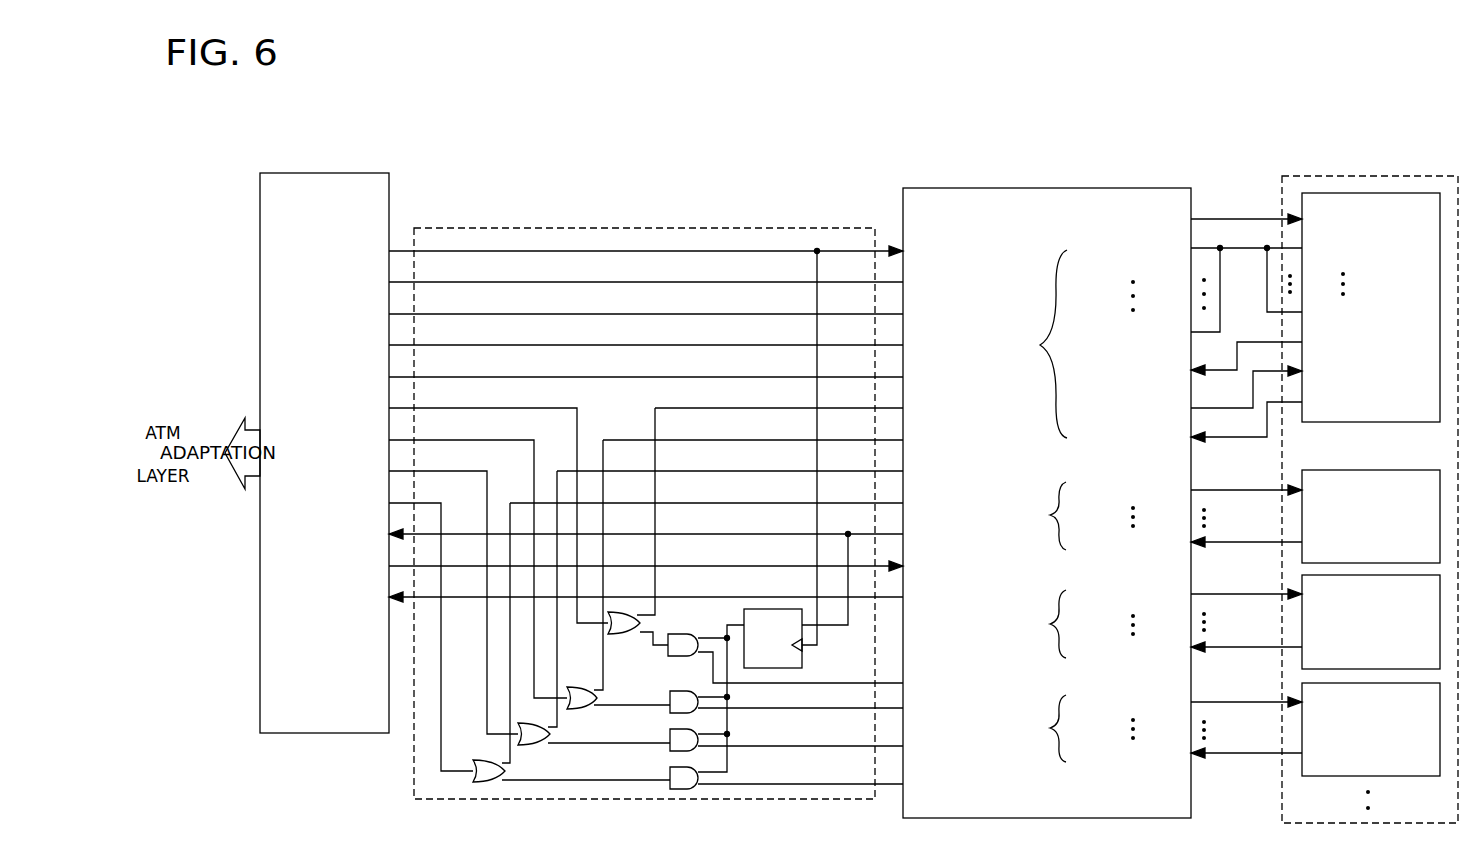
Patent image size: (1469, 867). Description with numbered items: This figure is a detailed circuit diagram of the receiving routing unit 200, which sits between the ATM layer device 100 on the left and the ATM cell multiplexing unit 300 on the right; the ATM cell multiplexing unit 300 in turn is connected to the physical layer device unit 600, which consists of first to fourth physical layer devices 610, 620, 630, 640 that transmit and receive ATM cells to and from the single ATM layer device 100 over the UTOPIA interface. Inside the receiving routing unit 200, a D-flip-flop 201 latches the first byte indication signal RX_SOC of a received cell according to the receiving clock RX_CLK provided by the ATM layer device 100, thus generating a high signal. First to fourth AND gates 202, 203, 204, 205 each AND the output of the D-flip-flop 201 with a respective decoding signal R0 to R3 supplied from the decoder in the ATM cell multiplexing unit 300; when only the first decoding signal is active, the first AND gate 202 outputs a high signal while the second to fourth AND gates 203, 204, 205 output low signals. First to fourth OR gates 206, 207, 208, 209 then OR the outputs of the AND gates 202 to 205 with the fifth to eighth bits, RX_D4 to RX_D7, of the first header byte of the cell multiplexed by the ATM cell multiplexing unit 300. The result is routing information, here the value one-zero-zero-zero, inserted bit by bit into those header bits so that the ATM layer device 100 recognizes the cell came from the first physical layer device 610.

The ATM layer device 100 is at (325, 173).
The receiving routing unit 200 is at (645, 228).
The ATM cell multiplexing unit 300 is at (1045, 188).
The physical layer device unit 600 is at (1282, 200).
The first physical layer device 610 is at (1380, 193).
The second physical layer device 620 is at (1302, 521).
The third physical layer device 630 is at (1302, 624).
The fourth physical layer device 640 is at (1302, 731).
The D-flip-flop 201 is at (802, 660).
The first AND gate 202 is at (682, 634).
The second AND gate 203 is at (698, 710).
The third AND gate 204 is at (698, 748).
The fourth AND gate 205 is at (670, 774).
The first OR gate 206 is at (632, 634).
The second OR gate 207 is at (585, 707).
The third OR gate 208 is at (547, 745).
The fourth OR gate 209 is at (480, 762).